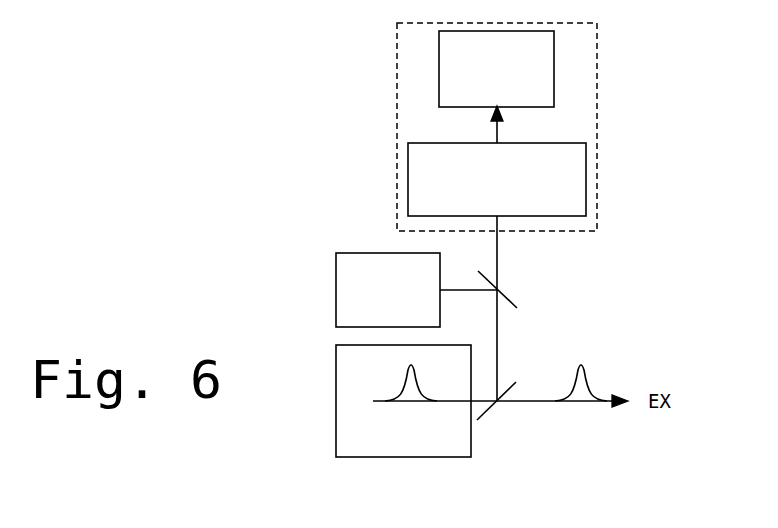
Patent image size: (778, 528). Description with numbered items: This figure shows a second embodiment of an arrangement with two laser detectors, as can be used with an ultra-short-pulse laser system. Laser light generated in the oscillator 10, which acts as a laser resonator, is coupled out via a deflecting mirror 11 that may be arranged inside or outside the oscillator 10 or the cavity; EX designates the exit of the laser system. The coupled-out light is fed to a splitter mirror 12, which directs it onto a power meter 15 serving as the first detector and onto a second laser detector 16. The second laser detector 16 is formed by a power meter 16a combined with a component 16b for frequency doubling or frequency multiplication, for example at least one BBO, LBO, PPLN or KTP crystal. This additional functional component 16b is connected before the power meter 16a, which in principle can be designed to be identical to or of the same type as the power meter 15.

The oscillator 10 is at (425, 429).
The deflecting mirror 11 is at (538, 417).
The splitter mirror 12 is at (548, 282).
The power meter 15 is at (380, 276).
The second laser detector 16 is at (544, 127).
The power meter 16a is at (430, 69).
The component for frequency doubling or frequency multiplication 16b is at (436, 161).